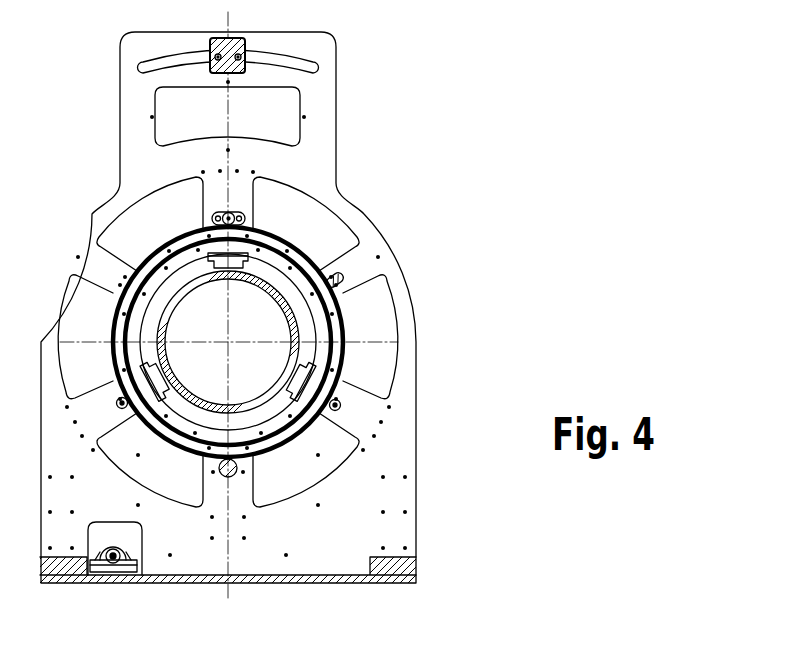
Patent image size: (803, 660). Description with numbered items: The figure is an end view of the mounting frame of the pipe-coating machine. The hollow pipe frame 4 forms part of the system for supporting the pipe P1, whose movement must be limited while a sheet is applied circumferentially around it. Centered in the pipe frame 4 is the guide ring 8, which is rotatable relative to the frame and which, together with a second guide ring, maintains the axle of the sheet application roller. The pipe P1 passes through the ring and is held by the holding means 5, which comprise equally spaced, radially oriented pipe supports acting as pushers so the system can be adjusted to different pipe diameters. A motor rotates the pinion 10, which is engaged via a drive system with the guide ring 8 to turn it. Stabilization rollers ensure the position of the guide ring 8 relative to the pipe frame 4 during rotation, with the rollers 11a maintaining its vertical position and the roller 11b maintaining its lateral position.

The hollow pipe frame 4 is at (395, 502).
The guide ring 8 is at (326, 267).
The holding means 5 is at (345, 380).
The pipe P1 is at (304, 330).
The vertical stabilization roller 11a is at (245, 214).
The lateral stabilization roller 11b is at (343, 281).
The pinion 10 is at (236, 476).